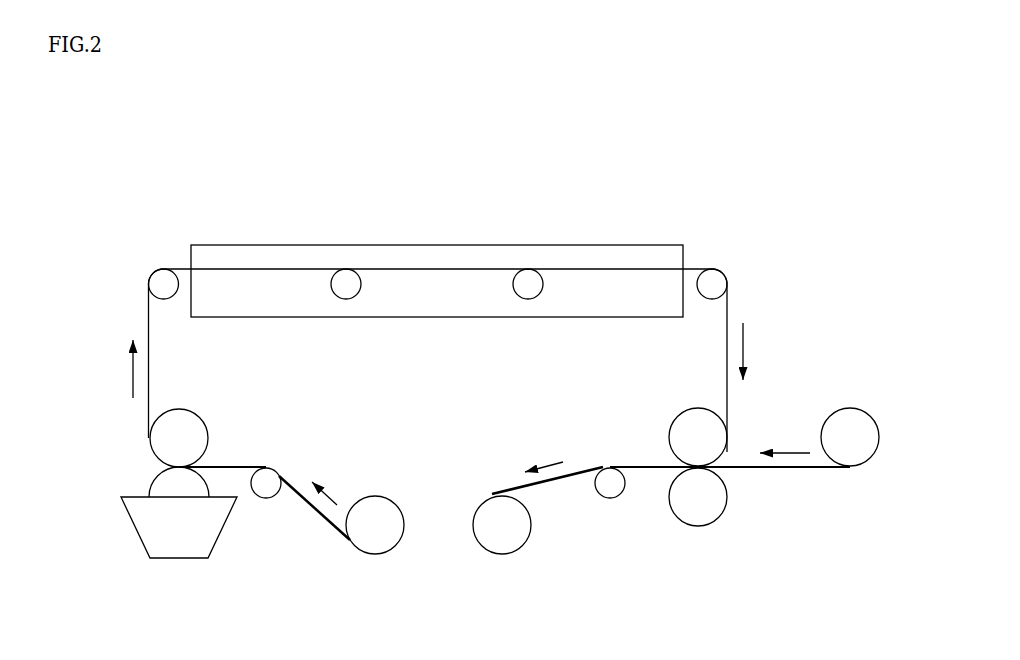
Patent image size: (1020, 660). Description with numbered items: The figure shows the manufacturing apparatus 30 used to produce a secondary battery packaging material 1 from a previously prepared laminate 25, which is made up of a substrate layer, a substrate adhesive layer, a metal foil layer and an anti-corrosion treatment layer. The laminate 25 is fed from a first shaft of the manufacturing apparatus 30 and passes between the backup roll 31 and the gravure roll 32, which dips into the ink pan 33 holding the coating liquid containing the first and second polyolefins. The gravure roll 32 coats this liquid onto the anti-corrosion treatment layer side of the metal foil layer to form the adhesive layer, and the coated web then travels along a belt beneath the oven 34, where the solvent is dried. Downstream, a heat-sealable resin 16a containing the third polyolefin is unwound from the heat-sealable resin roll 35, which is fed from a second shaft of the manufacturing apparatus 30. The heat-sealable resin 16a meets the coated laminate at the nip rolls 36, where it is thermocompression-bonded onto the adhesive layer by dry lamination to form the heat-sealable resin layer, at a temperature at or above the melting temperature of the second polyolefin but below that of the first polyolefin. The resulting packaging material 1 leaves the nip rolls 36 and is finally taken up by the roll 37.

The manufacturing apparatus 30 is at (160, 215).
The oven 34 is at (441, 245).
The backup roll 31 is at (182, 425).
The gravure roll 32 is at (167, 482).
The ink pan 33 is at (157, 533).
The laminate 25 is at (380, 497).
The roll 37 is at (497, 515).
The packaging material 1 is at (530, 533).
The nip rolls 36 is at (685, 437).
The heat-sealable resin roll 35 is at (848, 425).
The heat-sealable resin 16a is at (797, 467).